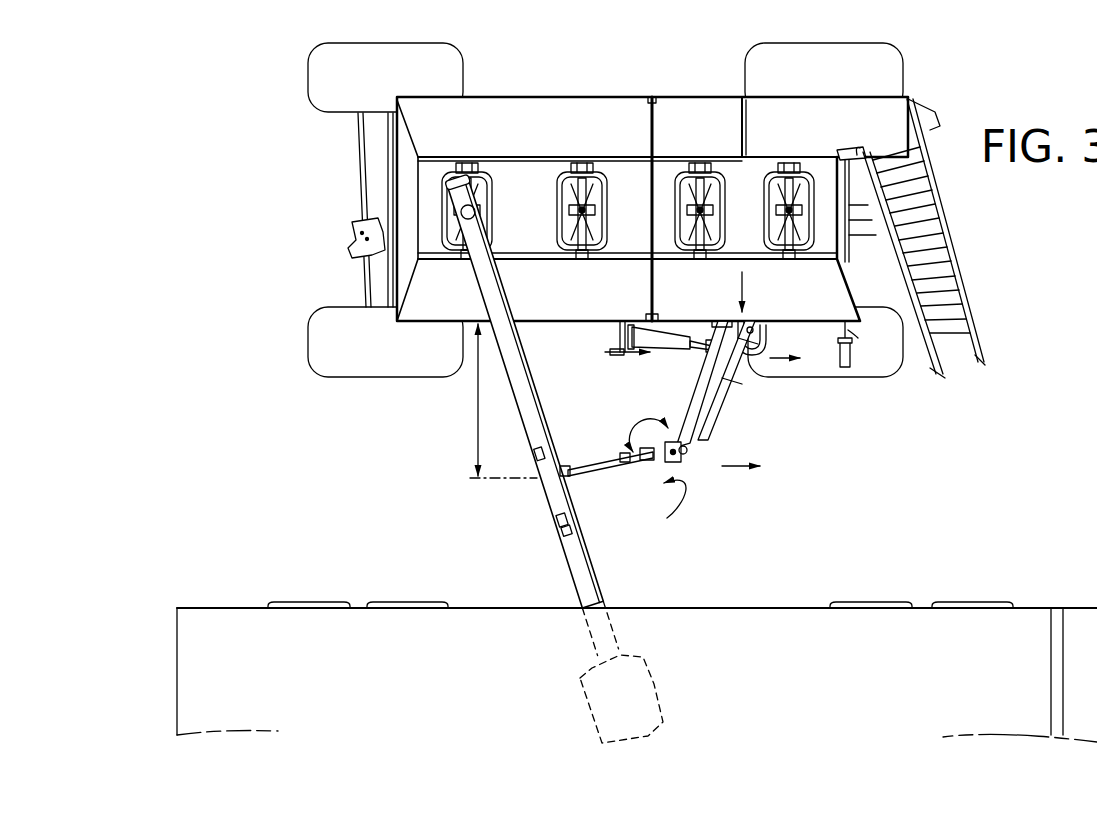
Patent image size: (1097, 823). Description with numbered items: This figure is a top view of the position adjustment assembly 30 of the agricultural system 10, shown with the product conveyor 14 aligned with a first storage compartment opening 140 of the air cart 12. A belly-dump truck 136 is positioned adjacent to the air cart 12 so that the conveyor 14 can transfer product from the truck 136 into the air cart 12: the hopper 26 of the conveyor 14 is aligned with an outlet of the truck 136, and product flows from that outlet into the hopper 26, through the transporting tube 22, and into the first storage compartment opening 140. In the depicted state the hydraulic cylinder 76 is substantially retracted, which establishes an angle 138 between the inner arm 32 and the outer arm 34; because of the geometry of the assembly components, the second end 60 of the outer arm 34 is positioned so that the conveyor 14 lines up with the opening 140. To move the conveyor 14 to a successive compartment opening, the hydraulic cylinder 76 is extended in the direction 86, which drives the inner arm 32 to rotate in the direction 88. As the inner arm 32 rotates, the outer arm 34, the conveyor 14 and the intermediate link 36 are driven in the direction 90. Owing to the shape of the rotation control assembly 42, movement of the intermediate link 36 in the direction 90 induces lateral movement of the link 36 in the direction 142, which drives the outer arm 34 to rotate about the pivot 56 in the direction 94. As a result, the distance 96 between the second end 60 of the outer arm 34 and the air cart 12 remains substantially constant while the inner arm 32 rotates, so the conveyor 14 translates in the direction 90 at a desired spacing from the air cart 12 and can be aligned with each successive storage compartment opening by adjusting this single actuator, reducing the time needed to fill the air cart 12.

The agricultural system 10 is at (262, 413).
The air cart 12 is at (268, 214).
The product conveyor 14 is at (394, 470).
The transporting tube 22 is at (565, 556).
The hopper 26 is at (660, 678).
The position adjustment assembly 30 is at (704, 491).
The inner arm 32 is at (692, 386).
The outer arm 34 is at (604, 478).
The intermediate link 36 is at (709, 415).
The rotation control assembly 42 is at (760, 320).
The pivot 56 is at (660, 462).
The second end of the outer arm 60 is at (568, 471).
The hydraulic cylinder 76 is at (667, 343).
The direction of hydraulic cylinder extension 86 is at (778, 362).
The direction of inner arm rotation 88 is at (718, 364).
The direction of translation 90 is at (738, 470).
The direction of outer arm rotation 94 is at (666, 511).
The distance 96 is at (476, 407).
The belly-dump truck 136 is at (951, 649).
The angle 138 is at (648, 428).
The first storage compartment opening 140 is at (489, 190).
The direction of lateral movement 142 is at (746, 296).